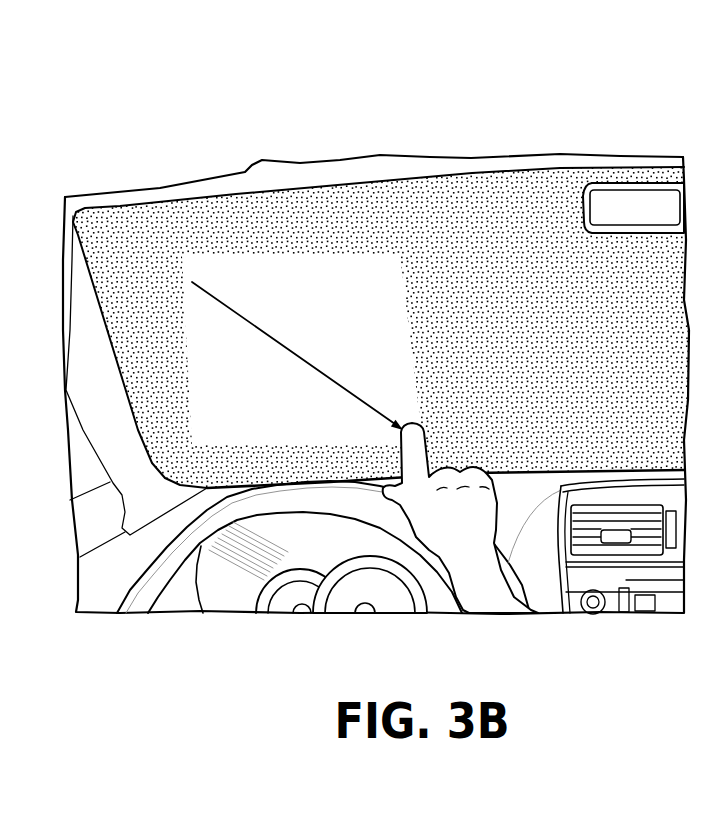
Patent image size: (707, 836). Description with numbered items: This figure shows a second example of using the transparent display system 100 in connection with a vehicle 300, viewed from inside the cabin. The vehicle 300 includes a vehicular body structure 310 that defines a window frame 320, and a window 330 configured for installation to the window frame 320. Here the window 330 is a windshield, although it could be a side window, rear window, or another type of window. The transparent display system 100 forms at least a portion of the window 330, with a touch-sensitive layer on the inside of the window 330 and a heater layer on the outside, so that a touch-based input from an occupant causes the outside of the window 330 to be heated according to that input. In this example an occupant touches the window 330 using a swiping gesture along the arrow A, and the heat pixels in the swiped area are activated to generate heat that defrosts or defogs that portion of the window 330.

The vehicle 300 is at (86, 197).
The vehicular body structure 310 is at (175, 187).
The window frame 320 is at (294, 165).
The window 330 is at (386, 173).
The transparent display system 100 is at (548, 343).
The arrow A is at (269, 337).